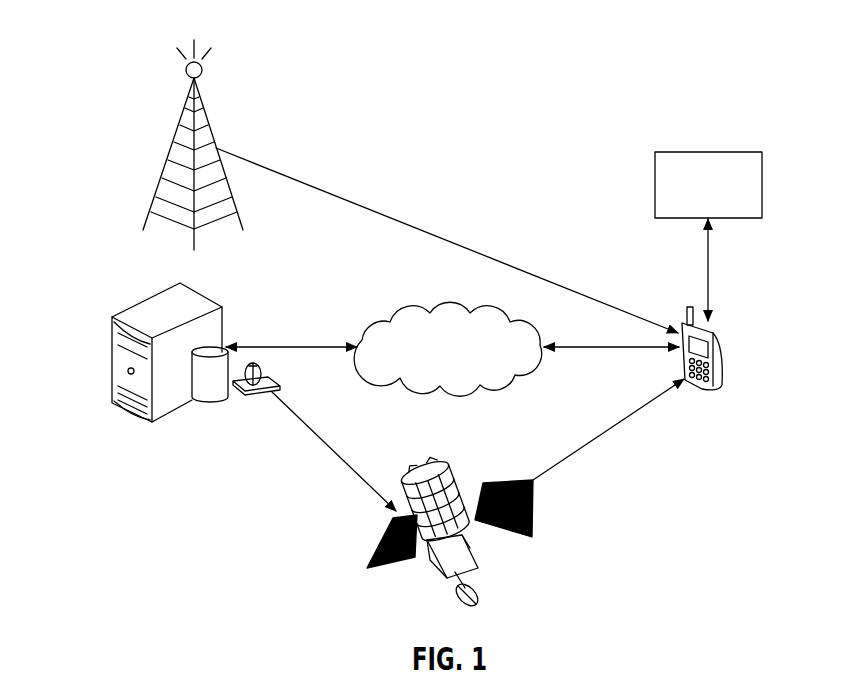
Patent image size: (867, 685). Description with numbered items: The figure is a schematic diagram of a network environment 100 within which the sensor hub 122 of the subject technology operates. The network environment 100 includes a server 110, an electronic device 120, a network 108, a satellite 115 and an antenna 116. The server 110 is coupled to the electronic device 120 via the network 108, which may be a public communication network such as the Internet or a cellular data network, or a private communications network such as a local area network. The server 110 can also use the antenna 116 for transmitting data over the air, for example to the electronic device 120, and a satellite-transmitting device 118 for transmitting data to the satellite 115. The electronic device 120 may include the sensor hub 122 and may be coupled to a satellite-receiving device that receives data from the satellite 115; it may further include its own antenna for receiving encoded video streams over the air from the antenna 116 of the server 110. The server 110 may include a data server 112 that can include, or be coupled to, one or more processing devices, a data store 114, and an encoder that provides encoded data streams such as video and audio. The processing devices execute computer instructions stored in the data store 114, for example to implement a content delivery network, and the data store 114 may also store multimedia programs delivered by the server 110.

The network environment 100 is at (146, 60).
The network 108 is at (411, 315).
The server 110 is at (187, 374).
The data server 112 is at (112, 362).
The data store 114 is at (218, 395).
The satellite 115 is at (455, 566).
The antenna 116 is at (172, 146).
The satellite-transmitting device 118 is at (264, 380).
The electronic device 120 is at (728, 357).
The sensor hub 122 is at (698, 152).